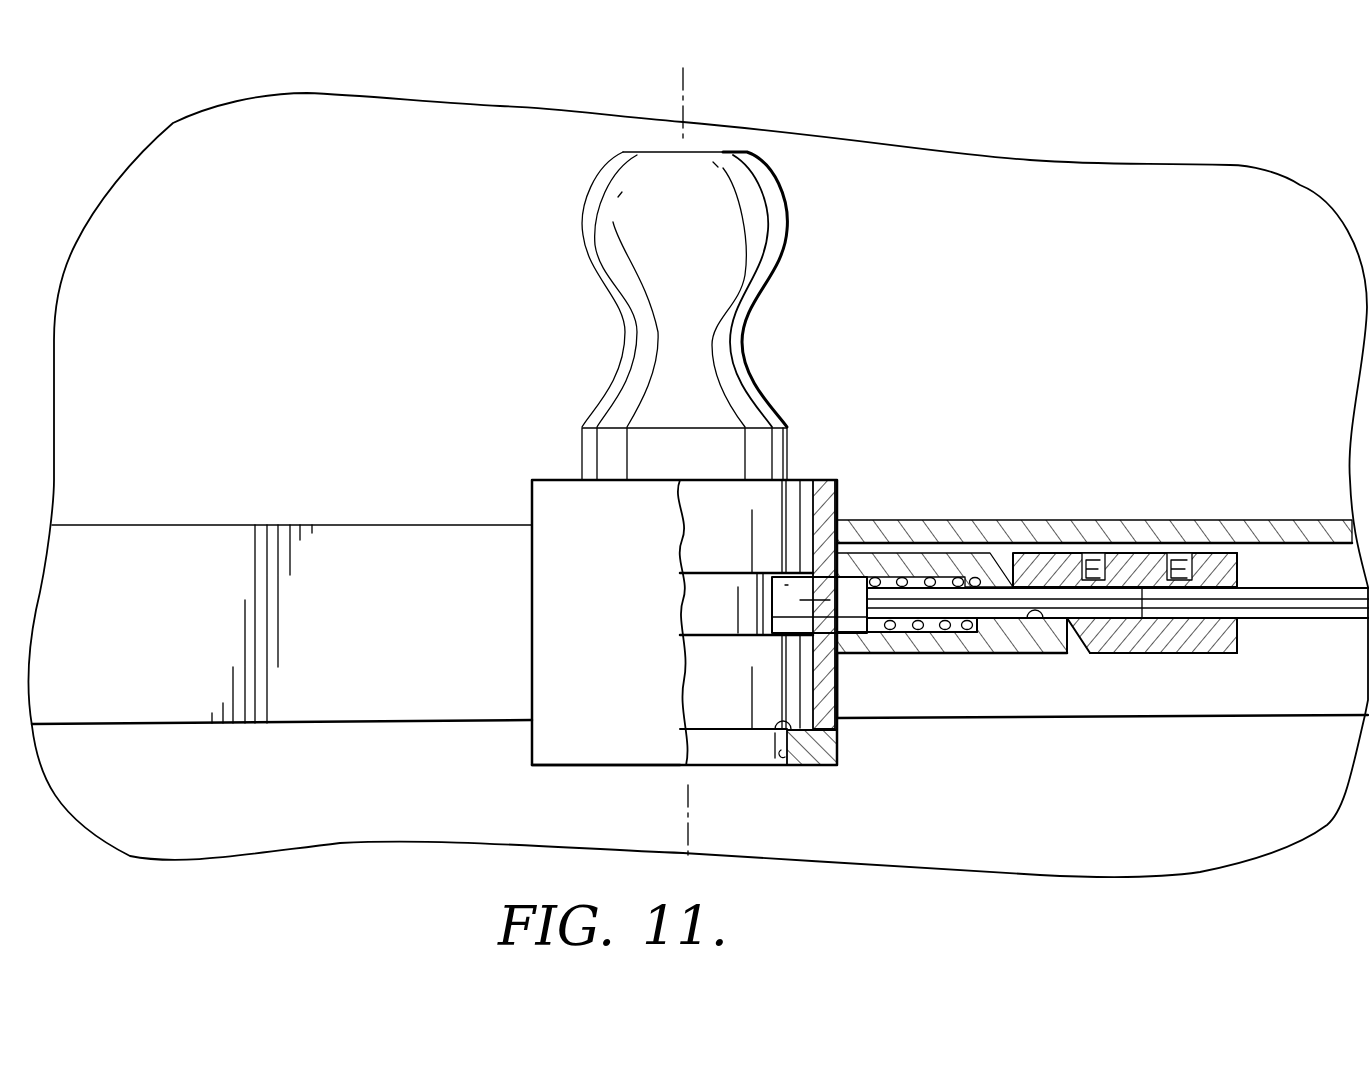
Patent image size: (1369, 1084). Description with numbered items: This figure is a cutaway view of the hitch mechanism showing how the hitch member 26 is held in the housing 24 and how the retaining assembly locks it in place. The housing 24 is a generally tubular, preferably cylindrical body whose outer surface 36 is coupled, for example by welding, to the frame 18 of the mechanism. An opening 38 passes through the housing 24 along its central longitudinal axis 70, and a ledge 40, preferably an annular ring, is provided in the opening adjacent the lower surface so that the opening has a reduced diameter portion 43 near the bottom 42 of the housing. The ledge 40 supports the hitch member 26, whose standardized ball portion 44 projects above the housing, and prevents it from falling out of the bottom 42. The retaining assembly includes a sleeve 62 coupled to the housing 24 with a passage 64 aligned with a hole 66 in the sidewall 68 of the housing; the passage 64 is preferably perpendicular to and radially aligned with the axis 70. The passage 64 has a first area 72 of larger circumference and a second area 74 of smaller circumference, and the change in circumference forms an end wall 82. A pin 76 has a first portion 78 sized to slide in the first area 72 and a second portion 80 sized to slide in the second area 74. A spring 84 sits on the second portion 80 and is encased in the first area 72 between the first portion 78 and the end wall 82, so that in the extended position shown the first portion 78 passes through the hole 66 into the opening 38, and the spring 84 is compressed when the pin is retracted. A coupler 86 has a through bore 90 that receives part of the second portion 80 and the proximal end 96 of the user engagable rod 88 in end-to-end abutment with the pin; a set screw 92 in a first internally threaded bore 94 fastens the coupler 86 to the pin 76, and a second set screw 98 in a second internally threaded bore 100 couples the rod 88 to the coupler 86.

The frame 18 is at (408, 525).
The housing 24 is at (550, 577).
The hitch member 26 is at (582, 462).
The outer surface 36 is at (538, 745).
The opening 38 is at (803, 480).
The ledge 40 is at (775, 730).
The bottom 42 is at (615, 768).
The reduced diameter portion 43 is at (783, 767).
The ball portion 44 is at (597, 190).
The sleeve 62 is at (905, 556).
The passage 64 is at (907, 640).
The hole 66 is at (850, 577).
The sidewall 68 is at (838, 695).
The central longitudinal axis 70 is at (686, 90).
The first area 72 is at (925, 640).
The second area 74 is at (1040, 655).
The pin 76 is at (1100, 640).
The first portion 78 is at (858, 656).
The second portion 80 is at (1030, 626).
The end wall 82 is at (975, 654).
The spring 84 is at (958, 577).
The coupler 86 is at (1225, 655).
The user engagable rod 88 is at (1302, 619).
The through bore 90 is at (1232, 590).
The set screw 92 is at (1093, 553).
The first internally threaded bore 94 is at (1082, 562).
The proximal end 96 is at (1180, 640).
The second set screw 98 is at (1137, 553).
The second internally threaded bore 100 is at (1183, 553).